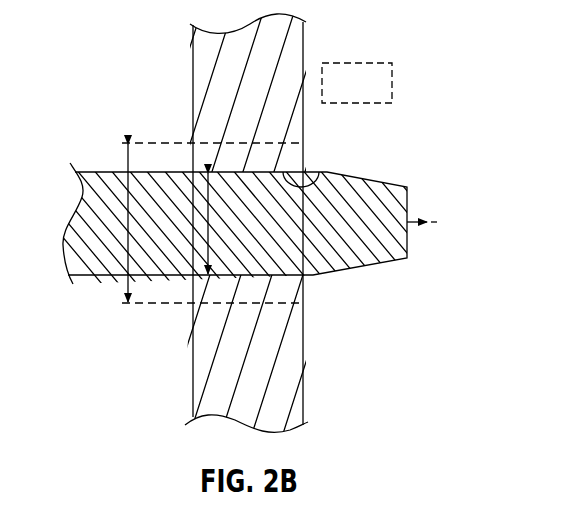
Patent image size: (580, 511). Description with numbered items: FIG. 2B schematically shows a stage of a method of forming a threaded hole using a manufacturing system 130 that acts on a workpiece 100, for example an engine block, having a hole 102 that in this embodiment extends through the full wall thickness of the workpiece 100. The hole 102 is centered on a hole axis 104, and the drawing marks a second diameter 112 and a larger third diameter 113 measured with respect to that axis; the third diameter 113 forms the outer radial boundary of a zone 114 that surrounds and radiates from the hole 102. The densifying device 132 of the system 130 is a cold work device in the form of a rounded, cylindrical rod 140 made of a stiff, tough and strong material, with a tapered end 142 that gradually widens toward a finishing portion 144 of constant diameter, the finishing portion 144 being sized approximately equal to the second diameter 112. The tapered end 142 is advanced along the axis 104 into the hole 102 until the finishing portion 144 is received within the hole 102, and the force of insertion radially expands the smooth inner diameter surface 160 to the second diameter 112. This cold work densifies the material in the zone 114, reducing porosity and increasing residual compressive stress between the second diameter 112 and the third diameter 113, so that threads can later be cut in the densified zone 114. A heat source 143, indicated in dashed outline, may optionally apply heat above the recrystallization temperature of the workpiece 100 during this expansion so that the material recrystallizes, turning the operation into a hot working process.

The workpiece 100 is at (204, 83).
The hole 102 is at (320, 290).
The hole axis 104 is at (438, 223).
The second diameter 112 is at (207, 206).
The third diameter 113 is at (128, 192).
The zone 114 is at (285, 157).
The manufacturing system 130 is at (117, 33).
The densifying device 132 is at (97, 181).
The rod 140 is at (108, 255).
The tapered end 142 is at (399, 237).
The heat source 143 is at (339, 62).
The finishing portion 144 is at (80, 247).
The inner diameter surface 160 is at (320, 172).